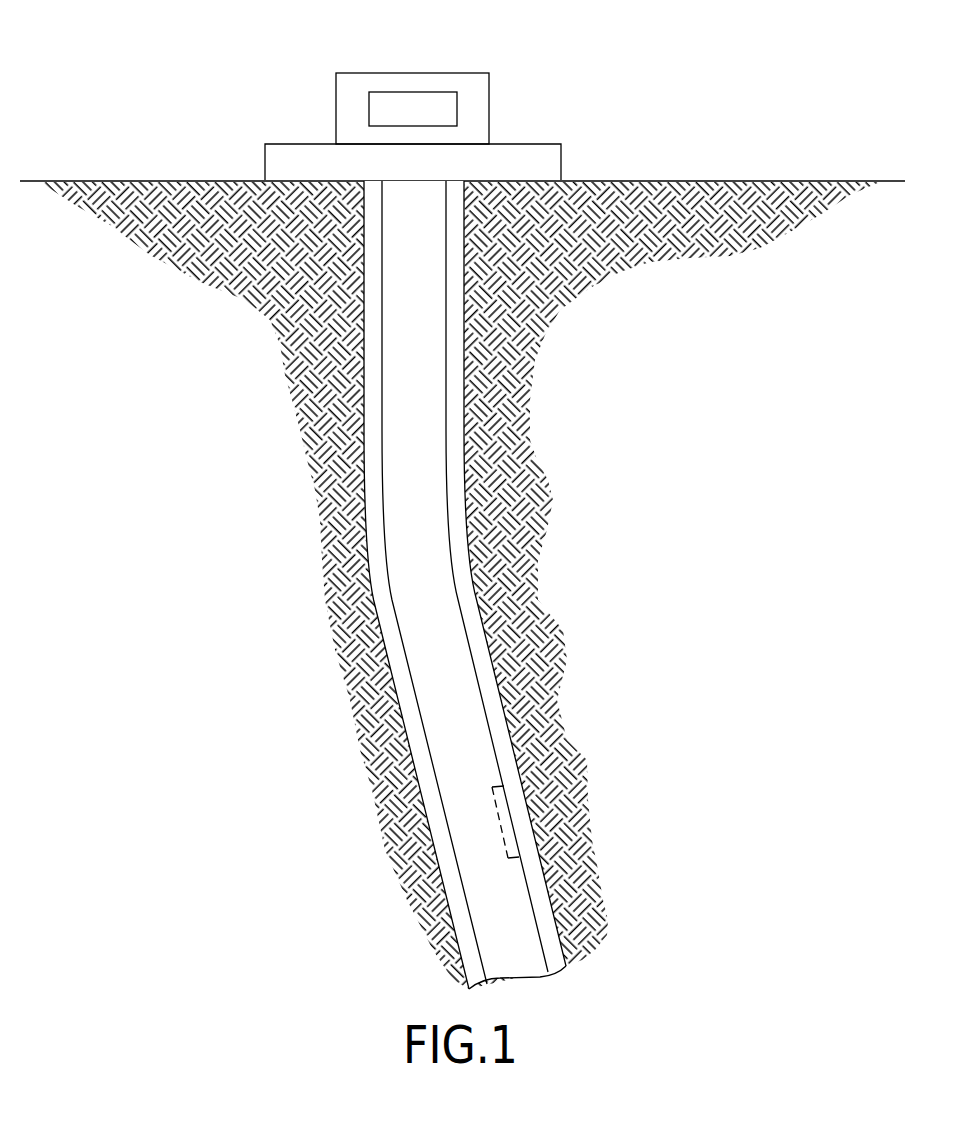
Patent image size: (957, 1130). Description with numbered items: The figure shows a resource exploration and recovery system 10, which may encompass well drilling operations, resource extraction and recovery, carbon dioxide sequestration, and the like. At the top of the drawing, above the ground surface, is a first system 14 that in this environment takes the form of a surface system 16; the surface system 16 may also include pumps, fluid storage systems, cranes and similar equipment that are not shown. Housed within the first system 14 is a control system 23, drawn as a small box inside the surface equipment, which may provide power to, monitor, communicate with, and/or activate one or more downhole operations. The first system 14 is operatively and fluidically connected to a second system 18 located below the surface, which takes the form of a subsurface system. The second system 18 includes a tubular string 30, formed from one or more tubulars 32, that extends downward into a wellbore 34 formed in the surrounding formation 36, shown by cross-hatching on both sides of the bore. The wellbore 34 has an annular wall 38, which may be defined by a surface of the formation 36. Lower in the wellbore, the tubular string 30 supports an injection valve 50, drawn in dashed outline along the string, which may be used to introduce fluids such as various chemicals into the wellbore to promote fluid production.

The resource exploration and recovery system 10 is at (667, 150).
The first system 14 is at (401, 92).
The surface system 16 is at (463, 74).
The control system 23 is at (395, 106).
The second system 18 is at (460, 585).
The formation 36 is at (533, 265).
The tubular string 30 is at (382, 433).
The tubular 32 is at (380, 313).
The wellbore 34 is at (452, 877).
The annular wall 38 is at (463, 387).
The injection valve 50 is at (517, 832).